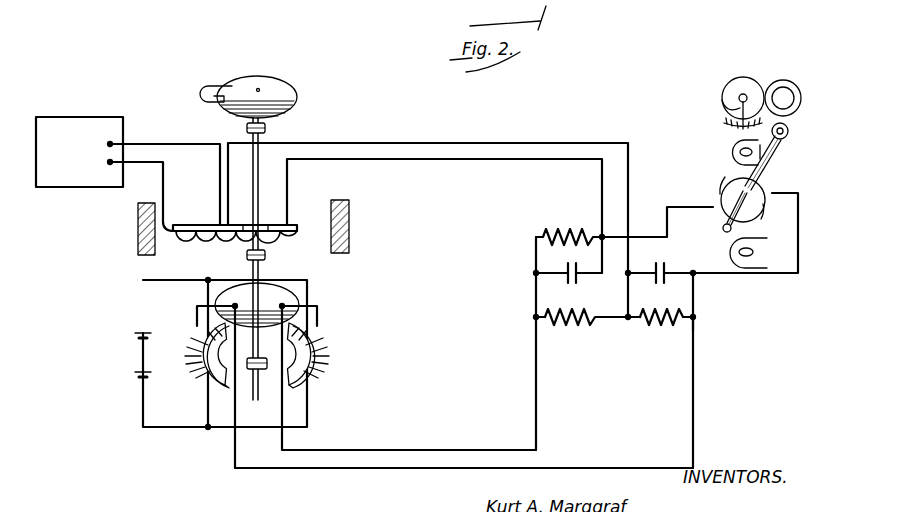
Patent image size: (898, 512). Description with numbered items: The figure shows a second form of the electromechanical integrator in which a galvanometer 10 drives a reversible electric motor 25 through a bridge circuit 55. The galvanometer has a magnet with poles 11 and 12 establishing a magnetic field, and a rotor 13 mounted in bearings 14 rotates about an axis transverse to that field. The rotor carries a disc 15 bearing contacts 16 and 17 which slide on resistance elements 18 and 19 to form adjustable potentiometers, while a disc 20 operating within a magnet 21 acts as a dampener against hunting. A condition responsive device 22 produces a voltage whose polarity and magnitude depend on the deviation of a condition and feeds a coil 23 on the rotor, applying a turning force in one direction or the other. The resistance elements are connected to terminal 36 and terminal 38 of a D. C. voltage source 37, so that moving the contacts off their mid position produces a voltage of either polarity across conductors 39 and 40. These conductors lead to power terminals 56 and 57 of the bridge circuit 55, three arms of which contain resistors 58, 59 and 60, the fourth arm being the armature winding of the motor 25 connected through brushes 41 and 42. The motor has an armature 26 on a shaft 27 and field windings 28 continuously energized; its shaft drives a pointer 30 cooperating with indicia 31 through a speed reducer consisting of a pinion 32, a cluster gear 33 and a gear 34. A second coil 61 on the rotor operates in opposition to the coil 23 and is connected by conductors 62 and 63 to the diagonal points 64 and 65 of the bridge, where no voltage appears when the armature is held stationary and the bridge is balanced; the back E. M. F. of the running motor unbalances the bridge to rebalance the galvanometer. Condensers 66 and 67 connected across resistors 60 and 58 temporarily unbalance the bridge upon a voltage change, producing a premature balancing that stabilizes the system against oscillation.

The galvanometer 10 is at (255, 219).
The magnet pole 11 is at (147, 252).
The magnet pole 12 is at (350, 252).
The rotor 13 is at (262, 273).
The bearings 14 is at (247, 129).
The disc 15 is at (285, 298).
The contact 16 is at (203, 342).
The contact 17 is at (316, 352).
The resistance element 18 is at (198, 378).
The resistance element 19 is at (326, 368).
The disc 20 is at (282, 80).
The magnet 21 is at (206, 87).
The condition responsive device 22 is at (77, 128).
The coil 23 is at (202, 222).
The reversible electric motor 25 is at (741, 216).
The armature 26 is at (757, 195).
The shaft 27 is at (762, 172).
The field windings 28 is at (735, 148).
The pointer 30 is at (728, 81).
The indicia 31 is at (725, 118).
The pinion 32 is at (788, 132).
The cluster gear 33 is at (784, 80).
The gear 34 is at (743, 76).
The terminal 36 is at (135, 333).
The D. C. voltage source 37 is at (135, 372).
The terminal 38 is at (138, 382).
The conductor 39 is at (349, 470).
The conductor 40 is at (357, 450).
The brush 41 is at (760, 207).
The brush 42 is at (718, 190).
The bridge circuit 55 is at (530, 236).
The power terminal 56 is at (693, 318).
The power terminal 57 is at (536, 318).
The resistor 58 is at (665, 326).
The resistor 59 is at (575, 322).
The resistor 60 is at (572, 232).
The coil 61 is at (246, 222).
The conductor 62 is at (447, 142).
The conductor 63 is at (434, 161).
The diagonal point 64 is at (628, 322).
The diagonal point 65 is at (605, 237).
The condenser 66 is at (578, 281).
The condenser 67 is at (659, 282).